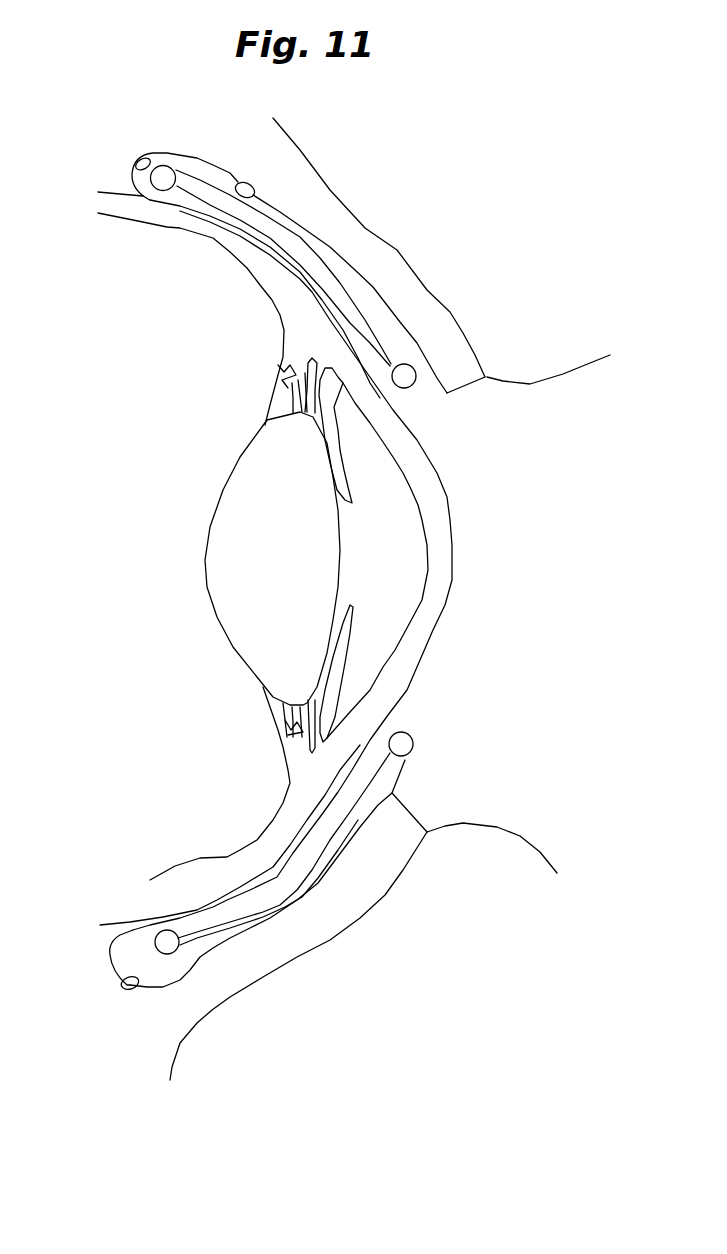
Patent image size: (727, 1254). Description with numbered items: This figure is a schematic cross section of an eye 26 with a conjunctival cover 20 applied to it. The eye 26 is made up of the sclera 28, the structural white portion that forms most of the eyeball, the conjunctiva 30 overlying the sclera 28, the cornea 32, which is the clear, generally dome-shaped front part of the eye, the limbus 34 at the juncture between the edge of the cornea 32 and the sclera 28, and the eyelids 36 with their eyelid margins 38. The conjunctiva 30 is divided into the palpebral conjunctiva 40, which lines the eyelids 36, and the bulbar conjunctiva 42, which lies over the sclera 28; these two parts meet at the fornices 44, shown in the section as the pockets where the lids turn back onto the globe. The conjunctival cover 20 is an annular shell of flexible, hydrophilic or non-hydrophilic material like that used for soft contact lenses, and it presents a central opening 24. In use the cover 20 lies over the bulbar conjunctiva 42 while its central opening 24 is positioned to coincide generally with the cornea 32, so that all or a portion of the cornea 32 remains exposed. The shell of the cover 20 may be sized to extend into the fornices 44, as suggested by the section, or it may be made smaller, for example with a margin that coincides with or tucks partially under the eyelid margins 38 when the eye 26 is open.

The conjunctival cover 20 is at (353, 310).
The central opening 24 is at (420, 712).
The eye 26 is at (448, 490).
The sclera 28 is at (241, 869).
The conjunctiva 30 is at (110, 962).
The cornea 32 is at (433, 630).
The limbus 34 is at (370, 747).
The eyelids 36 is at (462, 325).
The eyelid margins 38 is at (448, 393).
The palpebral conjunctiva 40 is at (240, 180).
The bulbar conjunctiva 42 is at (240, 222).
The fornices 44 is at (150, 158).